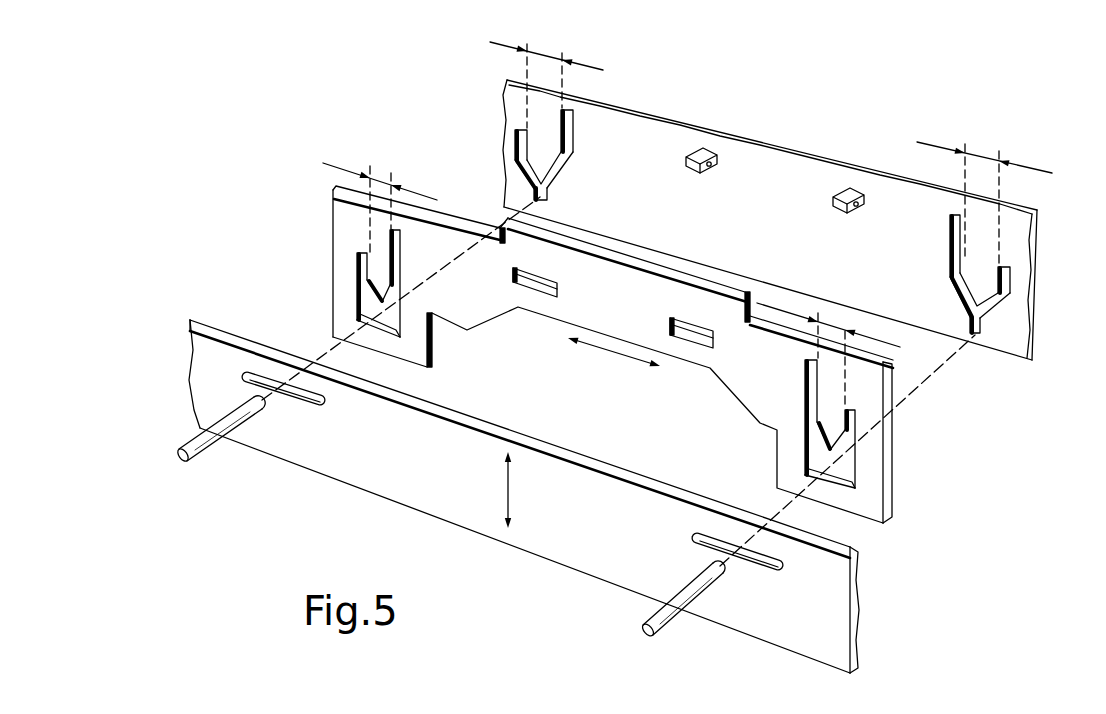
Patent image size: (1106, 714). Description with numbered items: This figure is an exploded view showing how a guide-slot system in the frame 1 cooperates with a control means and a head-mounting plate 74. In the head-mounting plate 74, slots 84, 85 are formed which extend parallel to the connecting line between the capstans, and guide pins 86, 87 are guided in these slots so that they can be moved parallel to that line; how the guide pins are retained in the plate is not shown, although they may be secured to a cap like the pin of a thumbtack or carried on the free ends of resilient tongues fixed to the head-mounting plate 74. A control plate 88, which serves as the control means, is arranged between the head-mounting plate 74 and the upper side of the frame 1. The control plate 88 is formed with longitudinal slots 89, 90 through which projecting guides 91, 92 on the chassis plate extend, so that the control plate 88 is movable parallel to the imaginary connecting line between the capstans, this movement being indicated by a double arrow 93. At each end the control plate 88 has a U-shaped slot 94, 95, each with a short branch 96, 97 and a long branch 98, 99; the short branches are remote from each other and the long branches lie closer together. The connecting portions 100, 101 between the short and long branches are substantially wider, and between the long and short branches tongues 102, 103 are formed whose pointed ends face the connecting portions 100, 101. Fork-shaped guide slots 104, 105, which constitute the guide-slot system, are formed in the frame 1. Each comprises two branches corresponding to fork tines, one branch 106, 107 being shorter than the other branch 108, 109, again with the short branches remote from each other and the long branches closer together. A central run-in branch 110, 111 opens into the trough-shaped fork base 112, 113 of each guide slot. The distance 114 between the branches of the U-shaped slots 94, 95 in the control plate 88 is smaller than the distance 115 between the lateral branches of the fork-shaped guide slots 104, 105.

The frame 1 is at (752, 163).
The head-mounting plate 74 is at (570, 547).
The slot 84 is at (243, 377).
The slot 85 is at (758, 560).
The guide pin 86 is at (192, 441).
The guide pin 87 is at (660, 622).
The control plate 88 is at (604, 370).
The longitudinal slot 89 is at (540, 283).
The longitudinal slot 90 is at (693, 335).
The projecting guide 91 is at (692, 169).
The projecting guide 92 is at (838, 208).
The double arrow 93 is at (614, 362).
The U-shaped slot 94 is at (357, 283).
The U-shaped slot 95 is at (820, 424).
The short branch 96 is at (357, 260).
The short branch 97 is at (853, 422).
The long branch 98 is at (400, 242).
The long branch 99 is at (805, 375).
The connecting portion 100 is at (433, 356).
The connecting portion 101 is at (856, 483).
The tongue 102 is at (380, 297).
The tongue 103 is at (850, 450).
The fork-shaped guide slot 104 is at (528, 163).
The fork-shaped guide slot 105 is at (979, 299).
The short branch 106 is at (515, 142).
The short branch 107 is at (1007, 279).
The long branch 108 is at (573, 127).
The long branch 109 is at (957, 236).
The central run-in branch 110 is at (548, 198).
The central run-in branch 111 is at (974, 336).
The trough-shaped fork base 112 is at (548, 177).
The trough-shaped fork base 113 is at (993, 309).
The distance 114 is at (384, 180).
The distance 115 is at (547, 53).